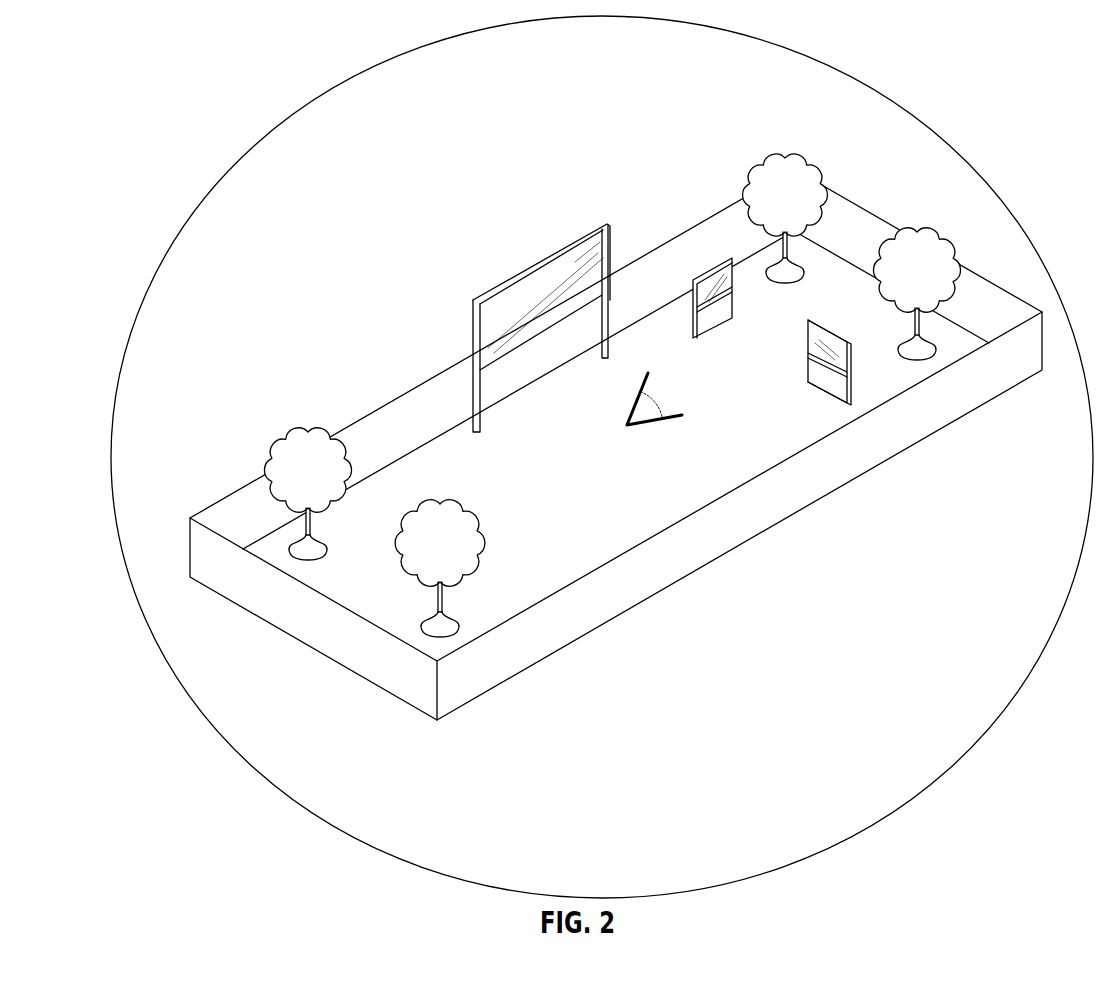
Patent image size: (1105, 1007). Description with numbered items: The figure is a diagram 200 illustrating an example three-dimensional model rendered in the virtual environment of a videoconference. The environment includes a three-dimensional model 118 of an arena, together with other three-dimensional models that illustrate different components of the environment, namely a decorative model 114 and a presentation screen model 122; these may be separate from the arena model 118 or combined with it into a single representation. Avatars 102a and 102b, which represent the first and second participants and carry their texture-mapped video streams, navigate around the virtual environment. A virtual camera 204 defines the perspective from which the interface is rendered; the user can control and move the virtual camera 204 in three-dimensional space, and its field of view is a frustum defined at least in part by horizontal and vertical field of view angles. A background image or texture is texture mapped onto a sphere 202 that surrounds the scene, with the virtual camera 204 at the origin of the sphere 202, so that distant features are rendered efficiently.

The diagram 200 is at (1088, 37).
The sphere 202 is at (346, 80).
The 3D model of an arena 118 is at (860, 205).
The decorative model 114 is at (773, 170).
The presentation screen model 122 is at (530, 283).
The avatar 102a is at (703, 270).
The avatar 102b is at (800, 345).
The virtual camera 204 is at (627, 432).